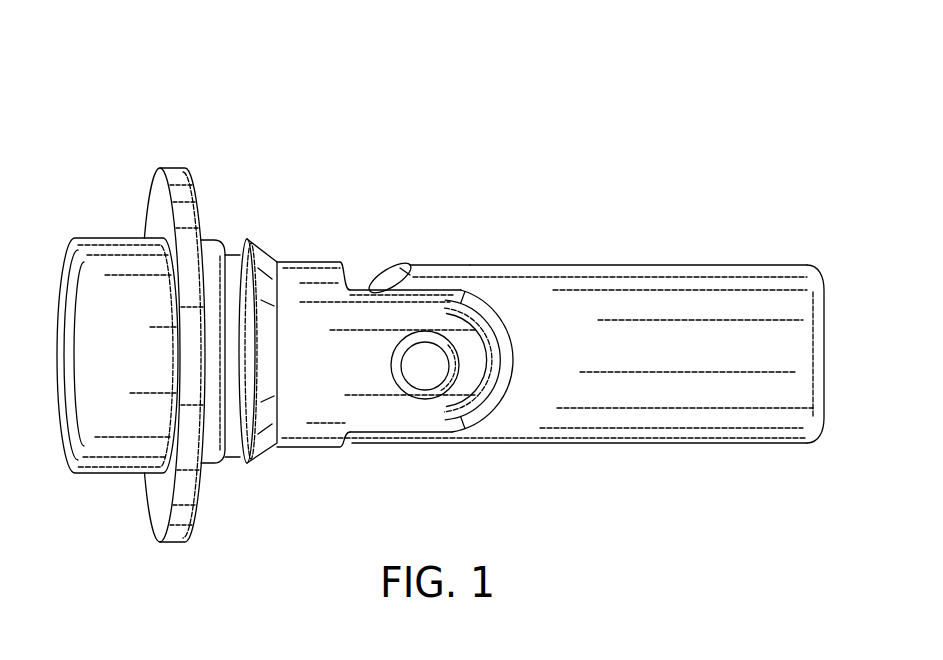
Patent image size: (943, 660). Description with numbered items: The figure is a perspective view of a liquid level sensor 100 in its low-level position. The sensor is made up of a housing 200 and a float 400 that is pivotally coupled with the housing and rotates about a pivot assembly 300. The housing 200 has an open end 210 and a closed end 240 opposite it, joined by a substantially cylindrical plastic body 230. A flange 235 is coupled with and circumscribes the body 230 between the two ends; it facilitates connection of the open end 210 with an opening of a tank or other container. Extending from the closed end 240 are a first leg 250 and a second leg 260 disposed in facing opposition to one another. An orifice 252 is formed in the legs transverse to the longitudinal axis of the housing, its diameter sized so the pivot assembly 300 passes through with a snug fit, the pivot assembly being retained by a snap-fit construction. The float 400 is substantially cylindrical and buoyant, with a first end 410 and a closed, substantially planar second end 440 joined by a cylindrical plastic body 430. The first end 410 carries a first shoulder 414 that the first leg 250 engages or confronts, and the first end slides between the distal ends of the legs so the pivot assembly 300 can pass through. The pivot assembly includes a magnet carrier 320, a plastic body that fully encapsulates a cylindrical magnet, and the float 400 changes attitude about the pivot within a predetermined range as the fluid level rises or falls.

The liquid level sensor 100 is at (547, 137).
The housing 200 is at (232, 202).
The open end 210 is at (73, 298).
The body 230 is at (112, 238).
The flange 235 is at (168, 168).
The closed end 240 is at (343, 270).
The first leg 250 is at (382, 408).
The orifice 252 is at (392, 372).
The second leg 260 is at (366, 270).
The pivot assembly 300 is at (435, 372).
The magnet carrier 320 is at (422, 393).
The float 400 is at (727, 232).
The first end 410 is at (433, 270).
The first shoulder 414 is at (523, 270).
The body 430 is at (618, 308).
The second end 440 is at (822, 330).